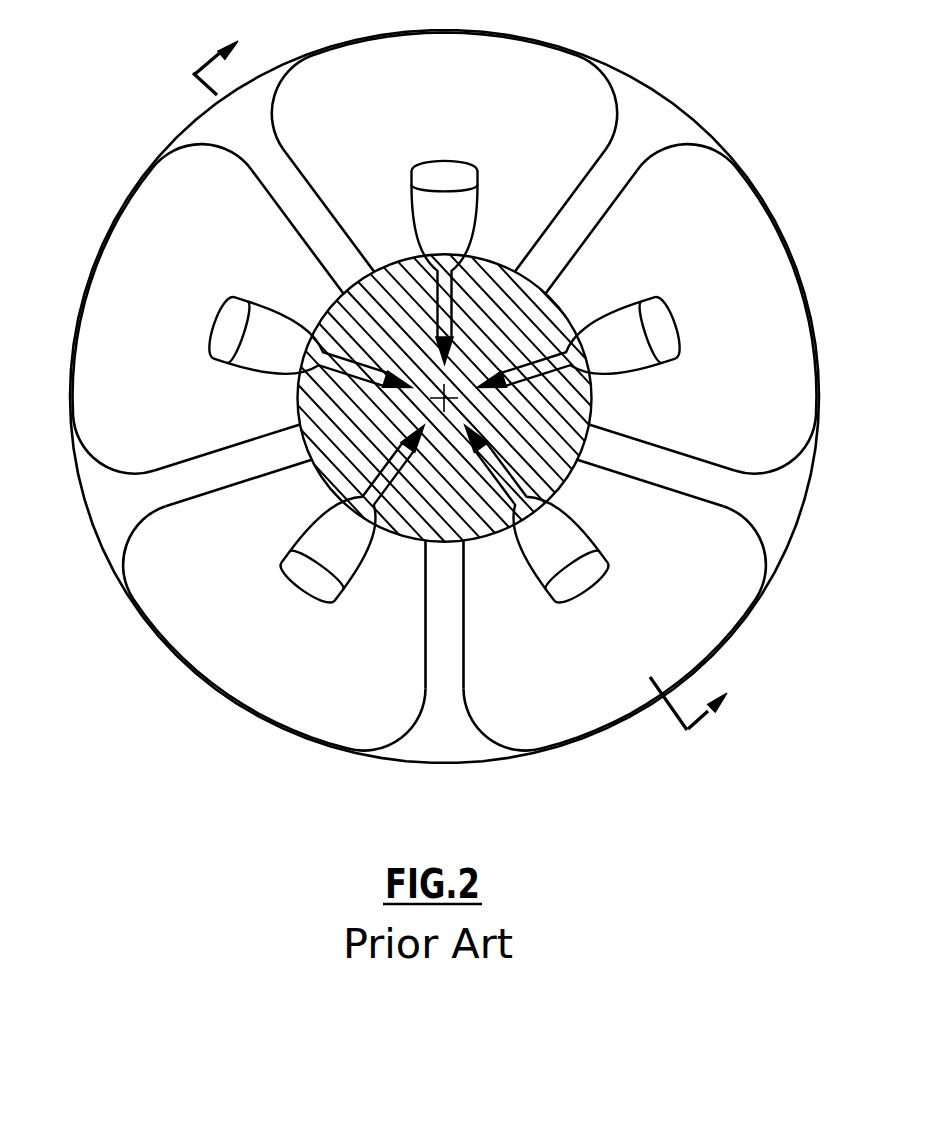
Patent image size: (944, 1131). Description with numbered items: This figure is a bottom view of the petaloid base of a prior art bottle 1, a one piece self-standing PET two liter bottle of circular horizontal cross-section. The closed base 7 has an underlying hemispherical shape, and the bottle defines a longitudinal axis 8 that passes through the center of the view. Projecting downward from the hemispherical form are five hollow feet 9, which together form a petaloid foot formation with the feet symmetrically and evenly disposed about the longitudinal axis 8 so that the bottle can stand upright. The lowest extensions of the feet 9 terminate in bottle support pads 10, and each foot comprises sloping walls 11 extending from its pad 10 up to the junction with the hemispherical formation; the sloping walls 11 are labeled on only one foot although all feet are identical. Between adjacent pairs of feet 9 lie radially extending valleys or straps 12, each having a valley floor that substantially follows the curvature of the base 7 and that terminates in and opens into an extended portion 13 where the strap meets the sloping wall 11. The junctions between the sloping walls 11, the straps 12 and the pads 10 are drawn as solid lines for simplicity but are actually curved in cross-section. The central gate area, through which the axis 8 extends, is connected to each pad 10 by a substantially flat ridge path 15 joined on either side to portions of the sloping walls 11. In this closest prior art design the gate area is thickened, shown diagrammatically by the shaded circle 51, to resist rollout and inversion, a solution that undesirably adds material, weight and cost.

The bottle 1 is at (820, 338).
The base 7 is at (815, 449).
The longitudinal axis 8 is at (497, 340).
The hollow feet 9 is at (553, 124).
The bottle support pads 10 is at (443, 167).
The sloping walls 11 is at (644, 536).
The valleys (straps) 12 is at (276, 158).
The extended portion 13 is at (267, 82).
The ridge path 15 is at (455, 212).
The shaded circle 51 is at (323, 497).